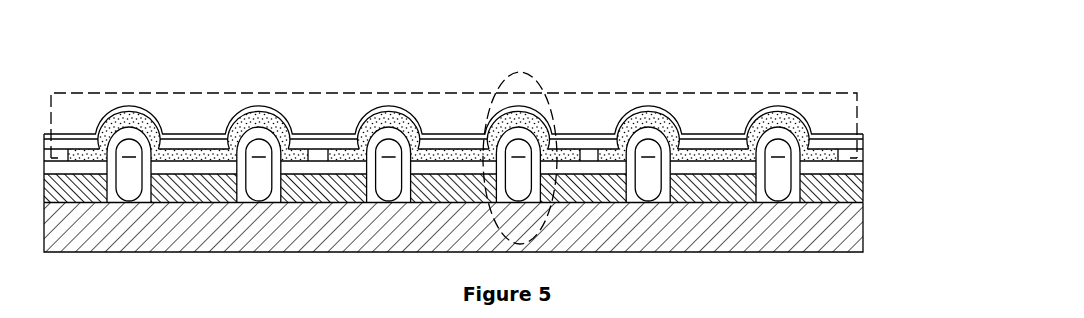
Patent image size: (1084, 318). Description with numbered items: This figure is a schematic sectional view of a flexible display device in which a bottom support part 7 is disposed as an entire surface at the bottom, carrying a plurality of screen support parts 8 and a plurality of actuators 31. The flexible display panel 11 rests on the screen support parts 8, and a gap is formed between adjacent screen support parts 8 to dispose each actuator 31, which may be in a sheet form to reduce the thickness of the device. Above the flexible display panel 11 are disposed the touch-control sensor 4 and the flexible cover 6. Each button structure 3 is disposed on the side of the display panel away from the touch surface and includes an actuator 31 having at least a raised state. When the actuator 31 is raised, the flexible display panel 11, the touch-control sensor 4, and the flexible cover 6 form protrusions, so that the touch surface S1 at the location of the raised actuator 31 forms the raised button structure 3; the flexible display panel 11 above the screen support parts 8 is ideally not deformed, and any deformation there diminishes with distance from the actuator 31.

The touch surface S1 is at (423, 92).
The button structure 3 is at (553, 120).
The actuator 31 is at (650, 147).
The flexible cover 6 is at (798, 116).
The touch-control sensor 4 is at (806, 140).
The flexible display panel 11 is at (837, 172).
The screen support part 8 is at (850, 196).
The bottom support part 7 is at (830, 236).